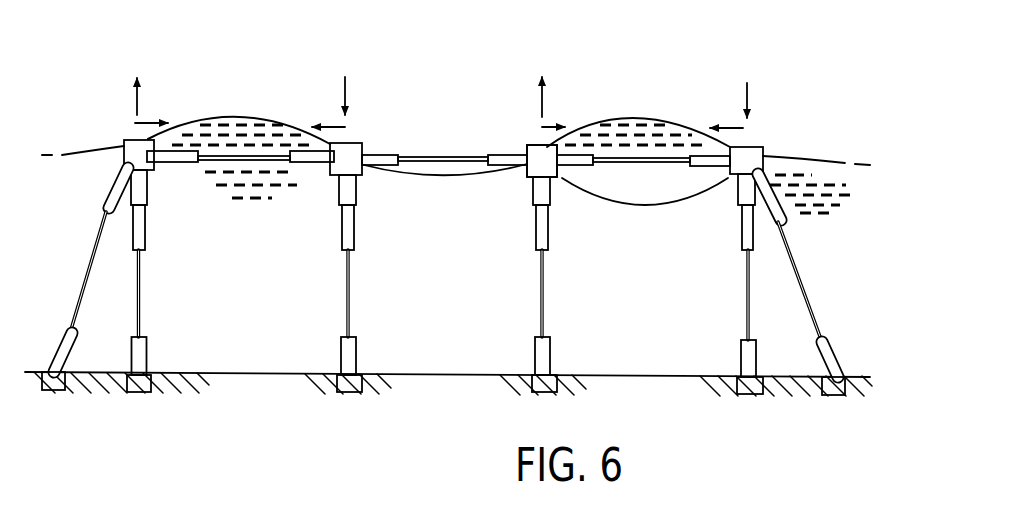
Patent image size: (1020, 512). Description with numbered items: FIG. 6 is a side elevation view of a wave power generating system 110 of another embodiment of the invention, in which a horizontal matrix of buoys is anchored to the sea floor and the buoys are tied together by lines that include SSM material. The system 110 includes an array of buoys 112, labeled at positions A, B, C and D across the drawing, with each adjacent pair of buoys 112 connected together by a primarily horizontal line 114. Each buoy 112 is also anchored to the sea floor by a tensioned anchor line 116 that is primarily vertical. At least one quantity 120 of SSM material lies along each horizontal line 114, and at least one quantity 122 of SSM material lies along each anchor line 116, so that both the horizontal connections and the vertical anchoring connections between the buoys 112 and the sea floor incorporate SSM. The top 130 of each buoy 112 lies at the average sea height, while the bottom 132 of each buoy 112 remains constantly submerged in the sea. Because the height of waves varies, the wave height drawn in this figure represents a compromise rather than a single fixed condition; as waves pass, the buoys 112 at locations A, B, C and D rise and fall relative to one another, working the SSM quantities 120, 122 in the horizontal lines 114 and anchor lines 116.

The system 110 is at (265, 82).
The buoy 112 is at (722, 175).
The horizontal line 114 is at (643, 157).
The anchor line 116 is at (748, 302).
The quantity of SSM material 120 is at (173, 163).
The quantity of SSM material 122 is at (317, 166).
The top of buoy 130 is at (530, 143).
The bottom of buoy 132 is at (532, 188).
The joint A is at (127, 140).
The joint B is at (363, 148).
The joint C is at (527, 147).
The joint D is at (763, 150).